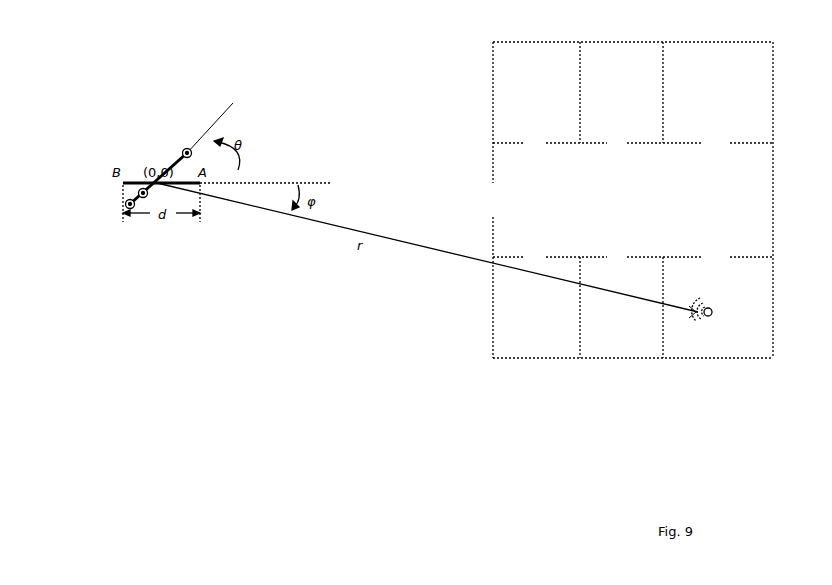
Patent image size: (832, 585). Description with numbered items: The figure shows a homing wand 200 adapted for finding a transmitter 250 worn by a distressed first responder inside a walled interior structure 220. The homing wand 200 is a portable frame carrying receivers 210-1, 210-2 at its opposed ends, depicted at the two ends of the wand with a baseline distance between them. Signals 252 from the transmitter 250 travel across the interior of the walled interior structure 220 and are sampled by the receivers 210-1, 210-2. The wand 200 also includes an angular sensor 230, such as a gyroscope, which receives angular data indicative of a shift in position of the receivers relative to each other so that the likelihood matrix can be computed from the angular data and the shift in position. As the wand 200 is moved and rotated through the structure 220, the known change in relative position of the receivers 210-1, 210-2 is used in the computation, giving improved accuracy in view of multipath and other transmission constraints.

The homing wand 200 is at (175, 162).
The receiver 210-1 is at (189, 149).
The receiver 210-2 is at (127, 201).
The angular sensor 230 is at (142, 198).
The walled interior structure 220 is at (636, 181).
The signals 252 is at (682, 292).
The transmitter 250 is at (697, 313).